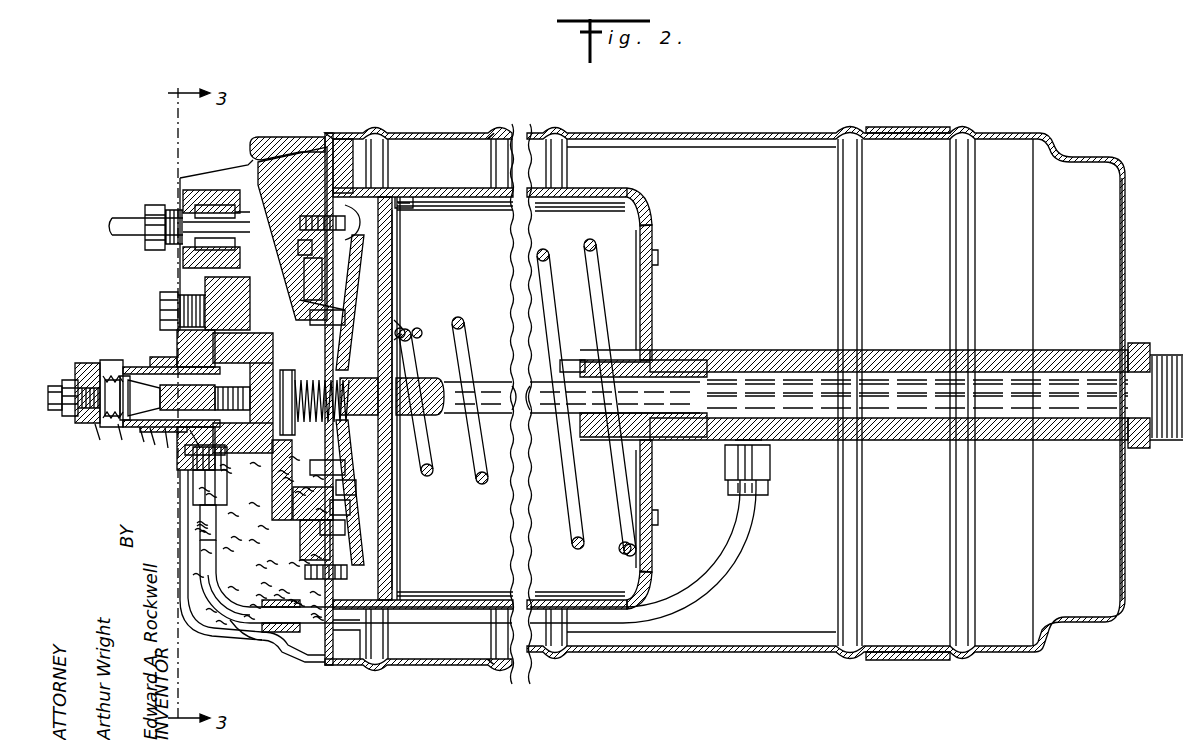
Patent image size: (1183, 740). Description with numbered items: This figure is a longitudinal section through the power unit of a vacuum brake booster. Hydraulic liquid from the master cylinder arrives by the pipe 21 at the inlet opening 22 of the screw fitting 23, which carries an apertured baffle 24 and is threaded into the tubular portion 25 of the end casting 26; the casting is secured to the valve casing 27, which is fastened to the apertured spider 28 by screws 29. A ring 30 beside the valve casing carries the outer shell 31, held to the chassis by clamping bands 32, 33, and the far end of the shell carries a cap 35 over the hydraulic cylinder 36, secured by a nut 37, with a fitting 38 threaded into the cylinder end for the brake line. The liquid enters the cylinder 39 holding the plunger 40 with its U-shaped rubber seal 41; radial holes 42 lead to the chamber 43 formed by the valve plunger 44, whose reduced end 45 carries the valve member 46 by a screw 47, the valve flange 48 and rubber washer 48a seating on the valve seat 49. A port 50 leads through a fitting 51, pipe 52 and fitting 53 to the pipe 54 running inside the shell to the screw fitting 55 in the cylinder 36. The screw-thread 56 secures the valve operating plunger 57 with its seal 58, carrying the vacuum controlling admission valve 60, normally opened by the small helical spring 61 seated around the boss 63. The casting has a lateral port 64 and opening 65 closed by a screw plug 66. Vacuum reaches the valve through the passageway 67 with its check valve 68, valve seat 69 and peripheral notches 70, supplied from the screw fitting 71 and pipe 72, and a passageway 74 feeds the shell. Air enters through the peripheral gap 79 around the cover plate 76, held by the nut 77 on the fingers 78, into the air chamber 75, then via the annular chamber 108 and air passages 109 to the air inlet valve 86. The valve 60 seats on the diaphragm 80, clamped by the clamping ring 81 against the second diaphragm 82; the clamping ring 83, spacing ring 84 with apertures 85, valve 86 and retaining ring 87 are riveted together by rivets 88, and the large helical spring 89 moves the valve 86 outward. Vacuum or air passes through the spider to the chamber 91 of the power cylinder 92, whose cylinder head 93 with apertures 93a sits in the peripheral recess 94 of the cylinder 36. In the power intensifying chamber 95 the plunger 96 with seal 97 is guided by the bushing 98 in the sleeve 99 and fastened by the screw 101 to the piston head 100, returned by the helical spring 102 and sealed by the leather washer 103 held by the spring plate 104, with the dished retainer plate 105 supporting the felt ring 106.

The pipe 21 is at (68, 380).
The inlet opening 22 is at (88, 386).
The screw fitting 23 is at (58, 412).
The apertured baffle 24 is at (98, 364).
The tubular portion 25 is at (108, 428).
The end casting 26 is at (196, 458).
The valve casing 27 is at (260, 541).
The apertured spider 28 is at (350, 508).
The screws 29 is at (315, 220).
The ring 30 is at (348, 666).
The outer shell 31 is at (534, 668).
The clamping band 32 is at (445, 667).
The clamping band 33 is at (912, 661).
The cap 35 is at (1085, 635).
The hydraulic cylinder 36 is at (914, 352).
The nut 37 is at (1142, 343).
The fitting 38 is at (1166, 356).
The cylinder 39 is at (170, 432).
The plunger 40 is at (196, 434).
The U-shaped rubber seal 41 is at (154, 432).
The radial holes 42 is at (144, 432).
The chamber 43 is at (146, 367).
The valve plunger 44 is at (187, 397).
The reduced end 45 is at (144, 398).
The valve member 46 is at (112, 374).
The screw 47 is at (102, 432).
The valve flange 48 is at (120, 380).
The rubber washer 48a is at (128, 376).
The valve seat 49 is at (122, 430).
The port 50 is at (200, 512).
The fitting 51 is at (200, 548).
The pipe 52 is at (212, 582).
The fitting 53 is at (270, 640).
The pipe 54 is at (560, 617).
The screw fitting 55 is at (768, 478).
The screw-thread 56 is at (224, 398).
The valve operating plunger 57 is at (268, 372).
The U-shaped rubber seal 58 is at (228, 470).
The vacuum controlling admission valve 60 is at (218, 500).
The small helical spring 61 is at (357, 492).
The boss 63 is at (357, 302).
The lateral port 64 is at (236, 290).
The opening 65 is at (222, 292).
The screw plug 66 is at (160, 306).
The passageway 67 is at (250, 185).
The check valve 68 is at (222, 209).
The valve seat 69 is at (216, 236).
The peripheral notches 70 is at (236, 196).
The screw fitting 71 is at (165, 206).
The pipe 72 is at (128, 226).
The passageway 74 is at (300, 168).
The air chamber 75 is at (236, 612).
The cover plate 76 is at (182, 576).
The nut 77 is at (185, 342).
The fingers 78 is at (266, 140).
The peripheral gap 79 is at (328, 140).
The diaphragm 80 is at (296, 516).
The clamping ring 81 is at (300, 545).
The second diaphragm 82 is at (345, 528).
The clamping ring 83 is at (272, 470).
The spacing ring 84 is at (355, 485).
The peripheral radial apertures 85 is at (296, 432).
The air inlet valve 86 is at (322, 285).
The retaining ring 87 is at (322, 388).
The rivets 88 is at (353, 466).
The large helical spring 89 is at (332, 302).
The chamber 91 is at (394, 330).
The power cylinder 92 is at (532, 200).
The cylinder head 93 is at (628, 205).
The apertures 93a is at (658, 258).
The peripheral recess 94 is at (636, 440).
The power intensifying chamber 95 is at (830, 398).
The plunger 96 is at (520, 416).
The U-shaped rubber seal 97 is at (700, 356).
The bushing 98 is at (572, 360).
The sleeve 99 is at (600, 420).
The piston head 100 is at (392, 258).
The screw 101 is at (440, 416).
The helical spring 102 is at (540, 262).
The leather washer 103 is at (366, 194).
The spring plate 104 is at (386, 282).
The dished retainer plate 105 is at (402, 238).
The felt ring 106 is at (406, 200).
The annular chamber 108 is at (340, 246).
The air passages 109 is at (300, 262).